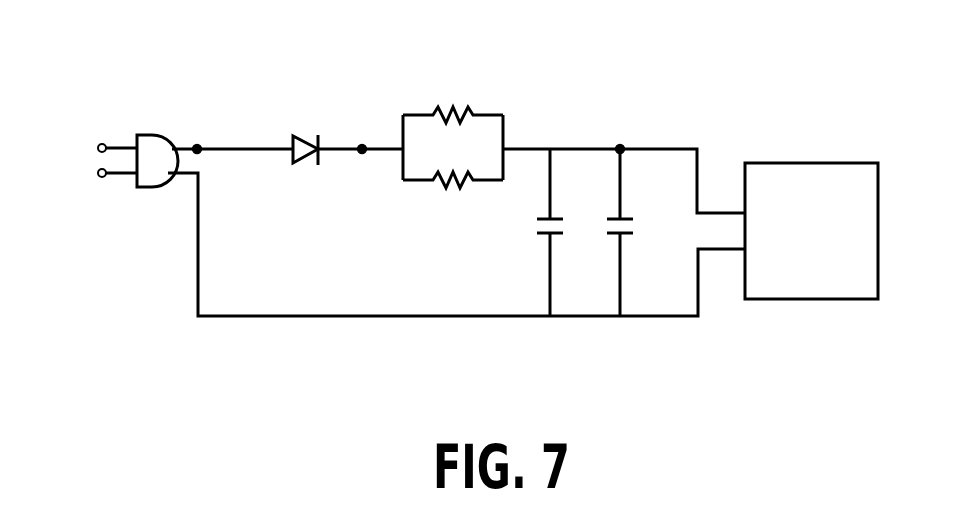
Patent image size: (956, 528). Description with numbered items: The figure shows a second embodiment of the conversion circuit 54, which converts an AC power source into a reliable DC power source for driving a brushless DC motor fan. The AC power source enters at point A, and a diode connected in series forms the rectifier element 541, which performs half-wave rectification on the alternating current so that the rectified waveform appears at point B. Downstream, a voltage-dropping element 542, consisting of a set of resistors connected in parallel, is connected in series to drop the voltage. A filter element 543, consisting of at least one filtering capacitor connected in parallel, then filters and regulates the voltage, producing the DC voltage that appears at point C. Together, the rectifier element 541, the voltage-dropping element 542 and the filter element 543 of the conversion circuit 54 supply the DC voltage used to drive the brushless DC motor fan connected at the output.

The conversion circuit 54 is at (252, 96).
The rectifier element 541 is at (308, 133).
The voltage-dropping element 542 is at (480, 108).
The filter element 543 is at (572, 230).